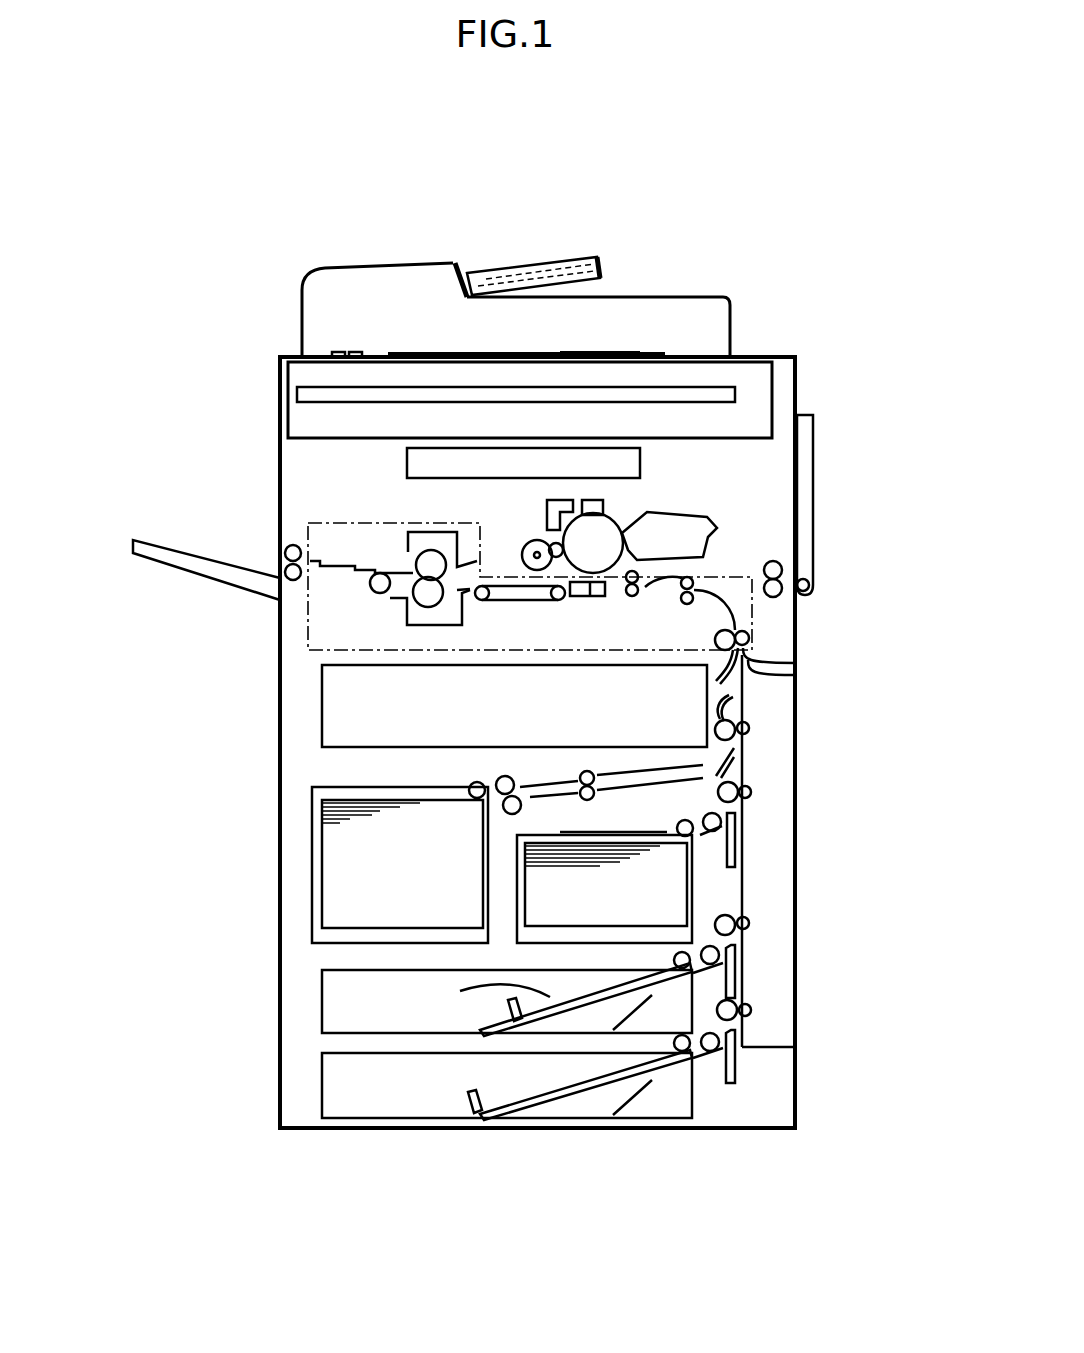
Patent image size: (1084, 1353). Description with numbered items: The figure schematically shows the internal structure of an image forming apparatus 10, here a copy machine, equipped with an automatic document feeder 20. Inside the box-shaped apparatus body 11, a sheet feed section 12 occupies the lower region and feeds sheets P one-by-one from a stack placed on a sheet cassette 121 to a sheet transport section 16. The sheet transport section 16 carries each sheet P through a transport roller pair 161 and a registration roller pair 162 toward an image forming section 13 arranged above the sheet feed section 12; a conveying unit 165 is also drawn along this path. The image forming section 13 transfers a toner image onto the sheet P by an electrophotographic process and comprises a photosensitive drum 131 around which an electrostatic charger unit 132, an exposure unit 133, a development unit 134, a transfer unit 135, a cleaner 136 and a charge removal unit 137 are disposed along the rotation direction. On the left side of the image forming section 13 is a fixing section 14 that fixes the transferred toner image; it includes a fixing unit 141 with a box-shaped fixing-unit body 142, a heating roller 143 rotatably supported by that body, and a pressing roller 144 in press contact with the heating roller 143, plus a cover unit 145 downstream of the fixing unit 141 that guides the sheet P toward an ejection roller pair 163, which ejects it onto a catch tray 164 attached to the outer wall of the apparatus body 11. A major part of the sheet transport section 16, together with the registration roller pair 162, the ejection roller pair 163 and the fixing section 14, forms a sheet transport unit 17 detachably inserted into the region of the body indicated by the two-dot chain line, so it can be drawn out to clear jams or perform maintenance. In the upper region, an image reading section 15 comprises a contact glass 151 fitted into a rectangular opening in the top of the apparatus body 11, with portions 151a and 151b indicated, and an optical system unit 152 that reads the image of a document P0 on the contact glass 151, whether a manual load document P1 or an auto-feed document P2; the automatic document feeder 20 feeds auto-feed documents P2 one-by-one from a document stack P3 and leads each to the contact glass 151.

The image forming apparatus 10 is at (772, 282).
The apparatus body 11 is at (276, 741).
The sheet feed section 12 is at (311, 982).
The sheet cassette 121 is at (517, 903).
The image forming section 13 is at (722, 488).
The photosensitive drum 131 is at (612, 548).
The electrostatic charger unit 132 is at (604, 496).
The exposure unit 133 is at (641, 461).
The development unit 134 is at (694, 550).
The transfer unit 135 is at (600, 597).
The cleaner 136 is at (520, 551).
The charge removal unit 137 is at (548, 497).
The fixing section 14 is at (118, 453).
The fixing unit 141 is at (185, 427).
The fixing-unit body 142 is at (428, 542).
The heating roller 143 is at (427, 562).
The pressing roller 144 is at (425, 590).
The cover unit 145 is at (337, 560).
The image reading section 15 is at (213, 156).
The contact glass 151 is at (346, 206).
The contact glass 151a is at (417, 355).
The document feed rollers 151b is at (340, 355).
The optical system unit 152 is at (300, 376).
The sheet transport section 16 is at (761, 637).
The transport roller pair 161 is at (752, 1010).
The registration roller pair 162 is at (685, 598).
The ejection roller pair 163 is at (285, 574).
The catch tray 164 is at (175, 560).
The conveying path unit 165 is at (507, 601).
The sheet transport unit 17 is at (300, 612).
The automatic document feeder 20 is at (341, 268).
The sheet P is at (347, 805).
The document P0 is at (705, 206).
The manual load document P1 is at (600, 352).
The auto-feed document P2 is at (537, 250).
The document stack P3 is at (525, 274).